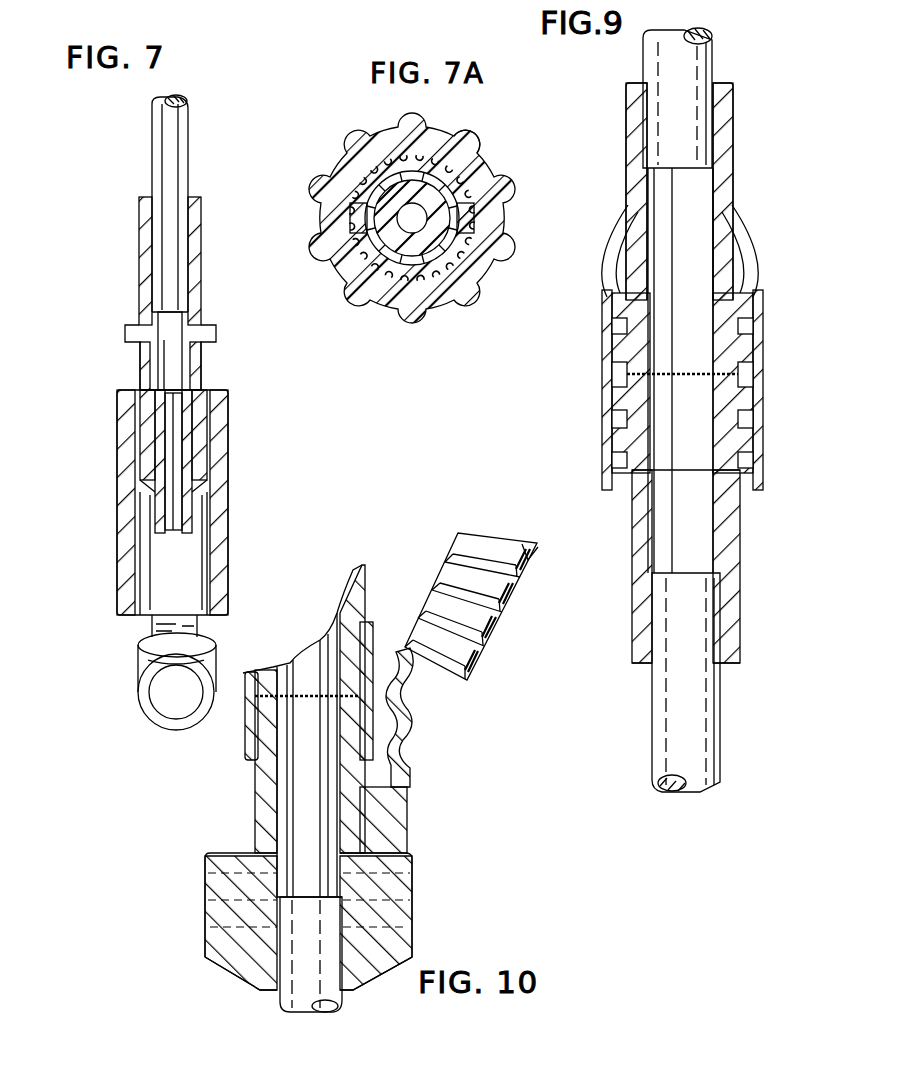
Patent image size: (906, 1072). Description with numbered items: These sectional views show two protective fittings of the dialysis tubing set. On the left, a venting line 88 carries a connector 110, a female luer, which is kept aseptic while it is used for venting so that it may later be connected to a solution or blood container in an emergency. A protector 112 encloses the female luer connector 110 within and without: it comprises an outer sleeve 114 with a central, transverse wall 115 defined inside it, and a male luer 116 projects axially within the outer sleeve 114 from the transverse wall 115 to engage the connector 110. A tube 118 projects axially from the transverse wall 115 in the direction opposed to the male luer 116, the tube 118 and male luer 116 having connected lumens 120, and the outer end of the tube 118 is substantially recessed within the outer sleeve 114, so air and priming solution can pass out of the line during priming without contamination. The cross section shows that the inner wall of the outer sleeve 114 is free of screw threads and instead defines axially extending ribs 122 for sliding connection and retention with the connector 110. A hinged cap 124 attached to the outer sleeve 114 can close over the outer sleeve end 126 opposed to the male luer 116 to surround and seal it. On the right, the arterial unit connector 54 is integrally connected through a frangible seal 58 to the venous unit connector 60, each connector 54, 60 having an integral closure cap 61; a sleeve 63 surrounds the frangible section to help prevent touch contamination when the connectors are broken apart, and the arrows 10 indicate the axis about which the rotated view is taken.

In FIG. 9, the tubular member 10 is at (582, 184).
In FIG. 9, the arterial unit connector 54 is at (730, 533).
In FIG. 10, the arterial unit connector 54 is at (263, 808).
In FIG. 9, the frangible seal 58 is at (692, 372).
In FIG. 10, the frangible seal 58 is at (307, 697).
In FIG. 9, the venous unit connector 60 is at (720, 167).
In FIG. 9, the integral closure cap 61 is at (750, 253).
In FIG. 10, the integral closure cap 61 is at (483, 553).
In FIG. 9, the sleeve 63 is at (758, 413).
In FIG. 10, the sleeve 63 is at (370, 623).
In FIG. 7, the venting line 88 is at (180, 155).
In FIG. 7, the connector 110 is at (216, 358).
In FIG. 7A, the connector 110 is at (372, 215).
In FIG. 7, the protector 112 is at (181, 502).
In FIG. 7, the outer sleeve 114 is at (223, 418).
In FIG. 7A, the outer sleeve 114 is at (347, 162).
In FIG. 7, the central transverse wall 115 is at (150, 485).
In FIG. 7, the male luer 116 is at (160, 437).
In FIG. 7A, the male luer 116 is at (477, 147).
In FIG. 7, the tube 118 is at (192, 508).
In FIG. 7, the connected lumens 120 is at (170, 467).
In FIG. 7A, the axially extending ribs 122 is at (452, 285).
In FIG. 7, the hinged cap 124 is at (140, 692).
In FIG. 7, the outer sleeve end 126 is at (128, 620).